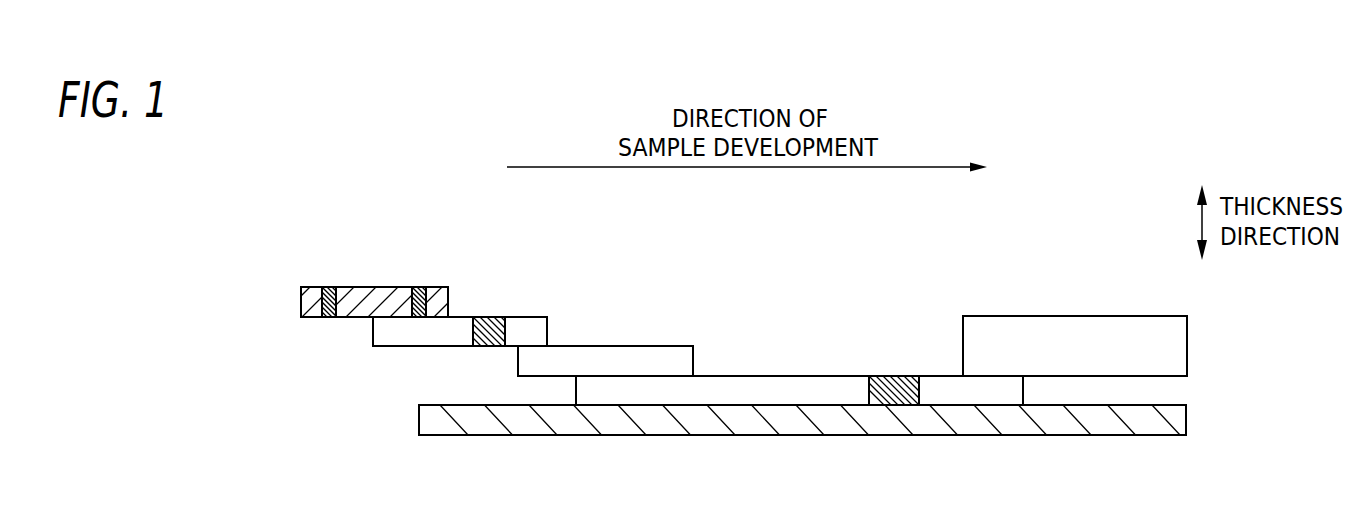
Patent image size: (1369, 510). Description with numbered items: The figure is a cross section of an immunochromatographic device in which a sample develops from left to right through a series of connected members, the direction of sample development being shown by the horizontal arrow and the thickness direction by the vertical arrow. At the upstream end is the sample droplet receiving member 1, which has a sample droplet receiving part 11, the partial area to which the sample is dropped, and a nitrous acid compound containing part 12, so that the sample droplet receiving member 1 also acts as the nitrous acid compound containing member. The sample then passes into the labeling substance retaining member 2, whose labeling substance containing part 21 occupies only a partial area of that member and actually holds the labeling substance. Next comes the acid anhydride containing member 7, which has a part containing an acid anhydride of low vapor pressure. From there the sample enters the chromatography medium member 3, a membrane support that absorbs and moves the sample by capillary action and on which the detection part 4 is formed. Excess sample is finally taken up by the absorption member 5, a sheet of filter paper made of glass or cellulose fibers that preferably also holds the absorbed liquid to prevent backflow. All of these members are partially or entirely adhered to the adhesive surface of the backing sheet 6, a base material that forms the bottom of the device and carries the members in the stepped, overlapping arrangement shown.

The sample droplet receiving member 1 is at (372, 302).
The sample droplet receiving part 11 is at (328, 302).
The nitrous acid compound containing part 12 is at (418, 300).
The labeling substance retaining member 2 is at (462, 328).
The labeling substance containing part 21 is at (490, 325).
The acid anhydride containing member 7 is at (643, 362).
The chromatography medium member 3 is at (772, 390).
The detection part 4 is at (895, 393).
The absorption member 5 is at (1077, 332).
The backing sheet 6 is at (1182, 416).